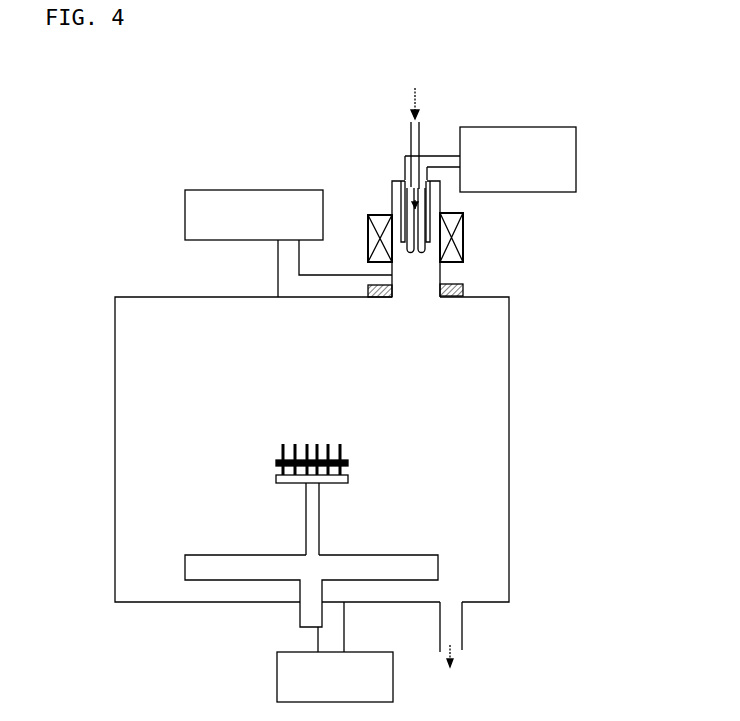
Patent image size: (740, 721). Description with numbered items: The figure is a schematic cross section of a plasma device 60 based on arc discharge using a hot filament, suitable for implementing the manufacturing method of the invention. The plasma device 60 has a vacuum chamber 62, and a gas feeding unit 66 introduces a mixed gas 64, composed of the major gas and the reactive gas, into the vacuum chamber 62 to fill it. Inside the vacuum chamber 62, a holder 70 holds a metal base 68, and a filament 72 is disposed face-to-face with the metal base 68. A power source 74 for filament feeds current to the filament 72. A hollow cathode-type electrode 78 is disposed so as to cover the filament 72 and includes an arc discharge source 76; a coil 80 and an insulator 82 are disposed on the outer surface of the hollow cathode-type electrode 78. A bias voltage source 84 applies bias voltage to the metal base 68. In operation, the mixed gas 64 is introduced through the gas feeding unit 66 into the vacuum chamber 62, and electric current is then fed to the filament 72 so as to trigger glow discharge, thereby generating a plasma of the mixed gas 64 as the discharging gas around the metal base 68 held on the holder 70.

The plasma device 60 is at (102, 253).
The vacuum chamber 62 is at (511, 432).
The mixed gas 64 is at (440, 94).
The gas feeding unit 66 is at (410, 150).
The metal base 68 is at (282, 447).
The holder 70 is at (277, 478).
The filament 72 is at (422, 255).
The power source for filament 74 is at (576, 160).
The arc discharge source 76 is at (185, 210).
The hollow cathode-type electrode 78 is at (384, 188).
The coil 80 is at (388, 207).
The insulator 82 is at (367, 290).
The bias voltage source 84 is at (277, 680).